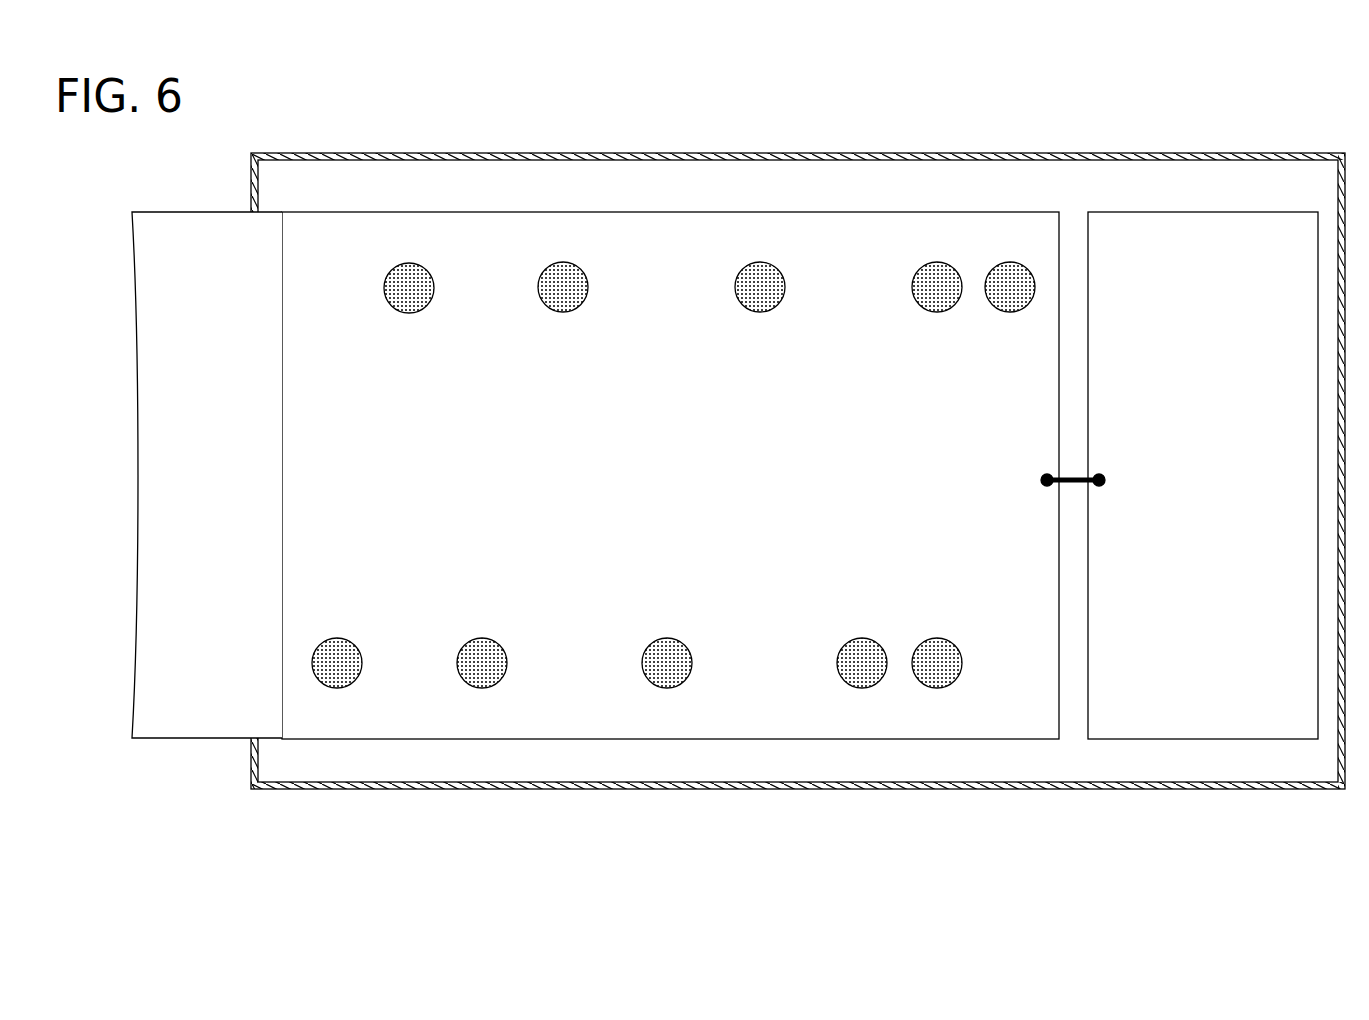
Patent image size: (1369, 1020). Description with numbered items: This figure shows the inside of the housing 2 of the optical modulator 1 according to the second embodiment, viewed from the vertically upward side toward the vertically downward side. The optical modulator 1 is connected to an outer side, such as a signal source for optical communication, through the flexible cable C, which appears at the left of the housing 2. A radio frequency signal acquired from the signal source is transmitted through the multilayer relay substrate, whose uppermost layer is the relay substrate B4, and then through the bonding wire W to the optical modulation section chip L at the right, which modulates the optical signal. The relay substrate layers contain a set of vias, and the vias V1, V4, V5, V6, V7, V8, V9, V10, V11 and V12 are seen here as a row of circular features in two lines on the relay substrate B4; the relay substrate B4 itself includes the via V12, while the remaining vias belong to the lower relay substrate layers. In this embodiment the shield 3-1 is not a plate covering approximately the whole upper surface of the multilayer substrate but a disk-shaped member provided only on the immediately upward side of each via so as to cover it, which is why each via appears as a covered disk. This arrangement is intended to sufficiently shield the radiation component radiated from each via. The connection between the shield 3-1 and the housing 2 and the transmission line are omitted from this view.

The optical modulator 1 is at (738, 426).
The housing 2 is at (560, 154).
The relay substrate B4 is at (376, 232).
The optical modulation section chip L is at (1240, 212).
The flexible cable C is at (198, 728).
The bonding wire W is at (1077, 478).
The shield 3-1 is at (710, 391).
The via V1 is at (338, 637).
The via V4 is at (409, 313).
The via V5 is at (482, 637).
The via V6 is at (562, 313).
The via V7 is at (668, 637).
The via V8 is at (760, 313).
The via V9 is at (860, 637).
The via V10 is at (927, 313).
The via V11 is at (938, 637).
The via V12 is at (1010, 262).